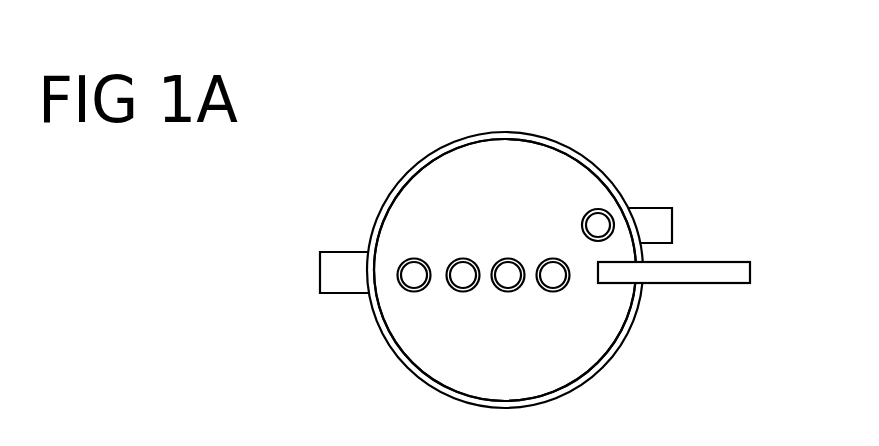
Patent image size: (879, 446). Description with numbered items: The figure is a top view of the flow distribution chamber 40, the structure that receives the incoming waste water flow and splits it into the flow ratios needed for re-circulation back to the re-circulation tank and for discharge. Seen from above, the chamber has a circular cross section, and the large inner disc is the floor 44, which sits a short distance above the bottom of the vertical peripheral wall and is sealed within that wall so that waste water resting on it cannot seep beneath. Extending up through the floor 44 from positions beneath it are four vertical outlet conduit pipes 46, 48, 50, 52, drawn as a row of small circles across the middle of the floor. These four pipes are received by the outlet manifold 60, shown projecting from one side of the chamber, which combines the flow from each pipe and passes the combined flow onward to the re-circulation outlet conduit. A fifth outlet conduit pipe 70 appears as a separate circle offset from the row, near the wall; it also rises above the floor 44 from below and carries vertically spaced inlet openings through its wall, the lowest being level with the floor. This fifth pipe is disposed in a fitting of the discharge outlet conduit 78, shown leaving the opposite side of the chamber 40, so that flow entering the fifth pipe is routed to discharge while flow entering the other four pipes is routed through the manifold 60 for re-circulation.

The flow distribution chamber 40 is at (465, 142).
The floor 44 is at (520, 354).
The vertical outlet conduit pipe 46 is at (555, 258).
The vertical outlet conduit pipe 48 is at (510, 258).
The vertical outlet conduit pipe 50 is at (463, 258).
The vertical outlet conduit pipe 52 is at (413, 258).
The outlet manifold 60 is at (340, 280).
The fifth outlet conduit pipe 70 is at (603, 210).
The discharge outlet conduit 78 is at (660, 220).